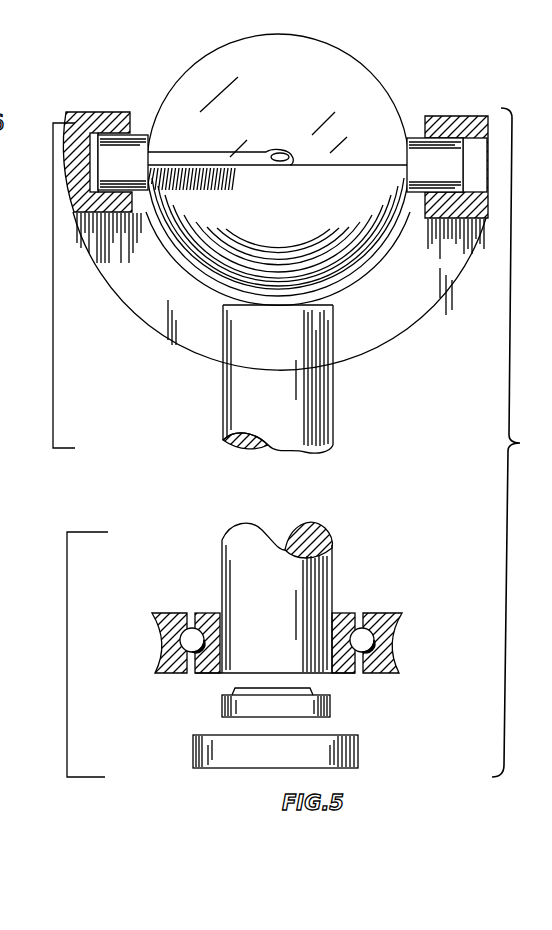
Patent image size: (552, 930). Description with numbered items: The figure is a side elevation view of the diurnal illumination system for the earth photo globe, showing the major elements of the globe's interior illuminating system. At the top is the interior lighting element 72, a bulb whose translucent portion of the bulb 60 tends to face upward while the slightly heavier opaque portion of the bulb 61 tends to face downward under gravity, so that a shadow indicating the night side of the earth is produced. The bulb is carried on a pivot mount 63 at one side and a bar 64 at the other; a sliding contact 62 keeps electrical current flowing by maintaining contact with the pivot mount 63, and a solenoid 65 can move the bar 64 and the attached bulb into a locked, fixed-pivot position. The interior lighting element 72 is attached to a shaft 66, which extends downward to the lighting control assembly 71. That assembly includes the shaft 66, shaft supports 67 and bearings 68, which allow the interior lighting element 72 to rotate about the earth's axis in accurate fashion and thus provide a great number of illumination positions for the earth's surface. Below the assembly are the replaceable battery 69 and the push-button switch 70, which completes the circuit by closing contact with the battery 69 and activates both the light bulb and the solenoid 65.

The translucent portion of the bulb 60 is at (223, 45).
The opaque portion of the bulb 61 is at (278, 233).
The sliding contact 62 is at (140, 133).
The pivot mount 63 is at (87, 112).
The bar 64 is at (417, 137).
The solenoid 65 is at (460, 116).
The shaft 66 is at (333, 410).
The shaft supports 67 is at (208, 612).
The bearings 68 is at (180, 628).
The replaceable battery 69 is at (330, 703).
The switch 70 is at (358, 752).
The lighting control assembly 71 is at (70, 654).
The interior lighting element 72 is at (48, 285).